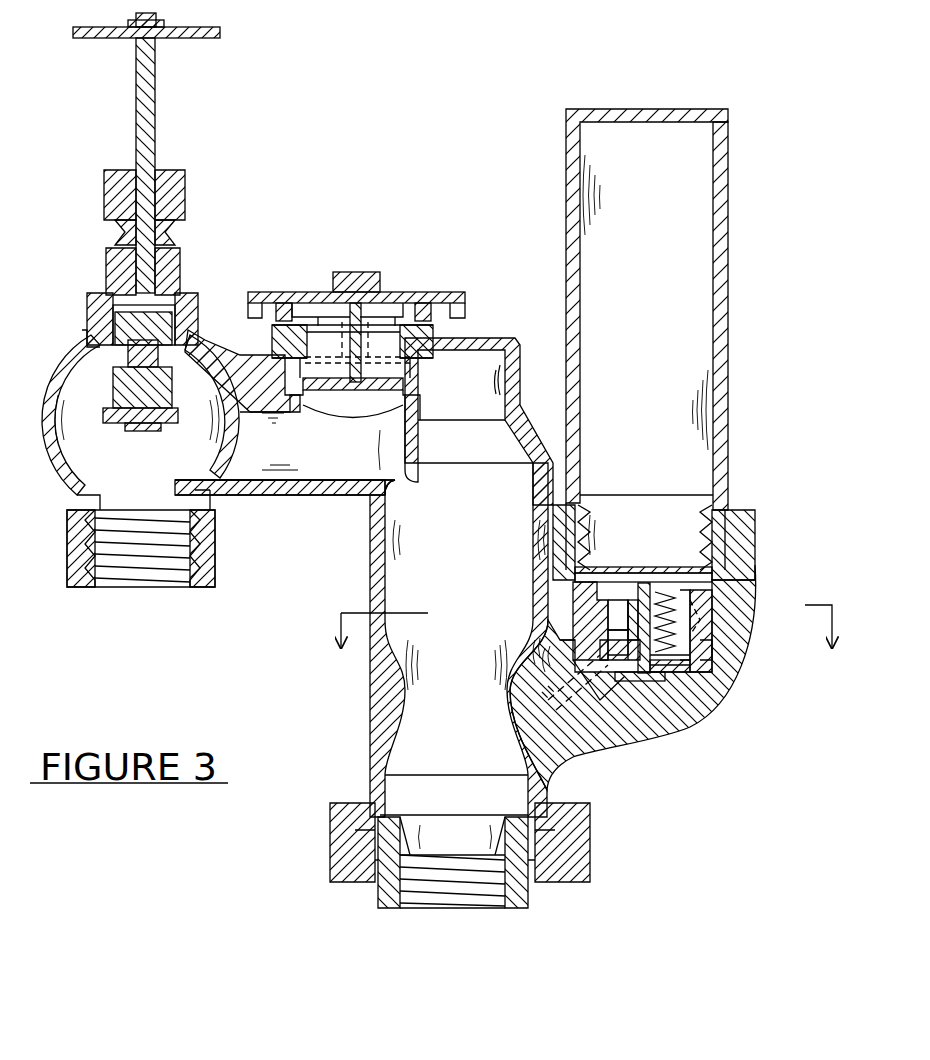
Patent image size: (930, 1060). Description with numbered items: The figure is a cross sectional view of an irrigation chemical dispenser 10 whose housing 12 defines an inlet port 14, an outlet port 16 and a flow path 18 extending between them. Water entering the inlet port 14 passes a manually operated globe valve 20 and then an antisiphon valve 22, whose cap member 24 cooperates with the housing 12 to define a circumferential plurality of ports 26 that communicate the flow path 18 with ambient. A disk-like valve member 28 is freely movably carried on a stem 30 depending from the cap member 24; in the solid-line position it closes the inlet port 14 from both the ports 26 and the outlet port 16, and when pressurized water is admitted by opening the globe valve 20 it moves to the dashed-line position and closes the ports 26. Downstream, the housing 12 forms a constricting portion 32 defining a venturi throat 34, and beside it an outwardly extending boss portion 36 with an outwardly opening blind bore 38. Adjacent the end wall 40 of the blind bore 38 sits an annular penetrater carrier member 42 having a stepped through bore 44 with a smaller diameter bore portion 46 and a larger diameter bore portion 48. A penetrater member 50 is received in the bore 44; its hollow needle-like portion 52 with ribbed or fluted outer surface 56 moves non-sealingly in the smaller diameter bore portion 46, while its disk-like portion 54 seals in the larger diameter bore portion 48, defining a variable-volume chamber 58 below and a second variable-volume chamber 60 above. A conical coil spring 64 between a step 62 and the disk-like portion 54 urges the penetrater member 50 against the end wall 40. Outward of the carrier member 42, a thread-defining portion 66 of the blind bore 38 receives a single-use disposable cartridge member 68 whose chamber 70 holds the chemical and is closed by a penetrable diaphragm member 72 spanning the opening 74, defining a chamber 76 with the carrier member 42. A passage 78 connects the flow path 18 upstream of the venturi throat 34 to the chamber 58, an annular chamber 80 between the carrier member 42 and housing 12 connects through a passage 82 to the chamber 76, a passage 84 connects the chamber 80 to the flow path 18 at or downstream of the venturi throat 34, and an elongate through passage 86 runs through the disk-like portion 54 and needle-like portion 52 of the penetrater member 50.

The irrigation chemical dispenser 10 is at (424, 86).
The housing 12 is at (320, 490).
The inlet port 14 is at (133, 588).
The outlet port 16 is at (455, 908).
The flow path 18 is at (322, 455).
The globe valve 20 is at (230, 200).
The antisiphon valve 22 is at (426, 274).
The cap member 24 is at (290, 292).
The ports 26 is at (450, 292).
The valve member 28 is at (409, 385).
The stem 30 is at (365, 330).
The constricting portion 32 is at (369, 723).
The venturi throat 34 is at (414, 672).
The boss portion 36 is at (728, 673).
The blind bore 38 is at (582, 629).
The end wall 40 is at (681, 664).
The penetrater carrier member 42 is at (616, 601).
The stepped through bore 44 is at (612, 624).
The smaller diameter bore portion 46 is at (636, 600).
The larger diameter bore portion 48 is at (700, 650).
The penetrater member 50 is at (637, 688).
The needle-like portion 52 is at (655, 586).
The disk-like portion 54 is at (560, 652).
The ribbed or fluted outer surface 56 is at (660, 600).
The variable-volume chamber 58 is at (668, 682).
The second variable-volume chamber 60 is at (668, 623).
The step 62 is at (583, 641).
The conical coil spring 64 is at (647, 688).
The thread-defining portion 66 is at (711, 512).
The cartridge member 68 is at (729, 202).
The chamber 70 is at (666, 329).
The penetrable diaphragm member 72 is at (612, 570).
The opening 74 is at (697, 566).
The chamber 76 is at (575, 572).
The passage 78 is at (540, 643).
The annular chamber 80 is at (700, 664).
The passage 82 is at (690, 640).
The passage 84 is at (522, 727).
The through passage 86 is at (652, 683).